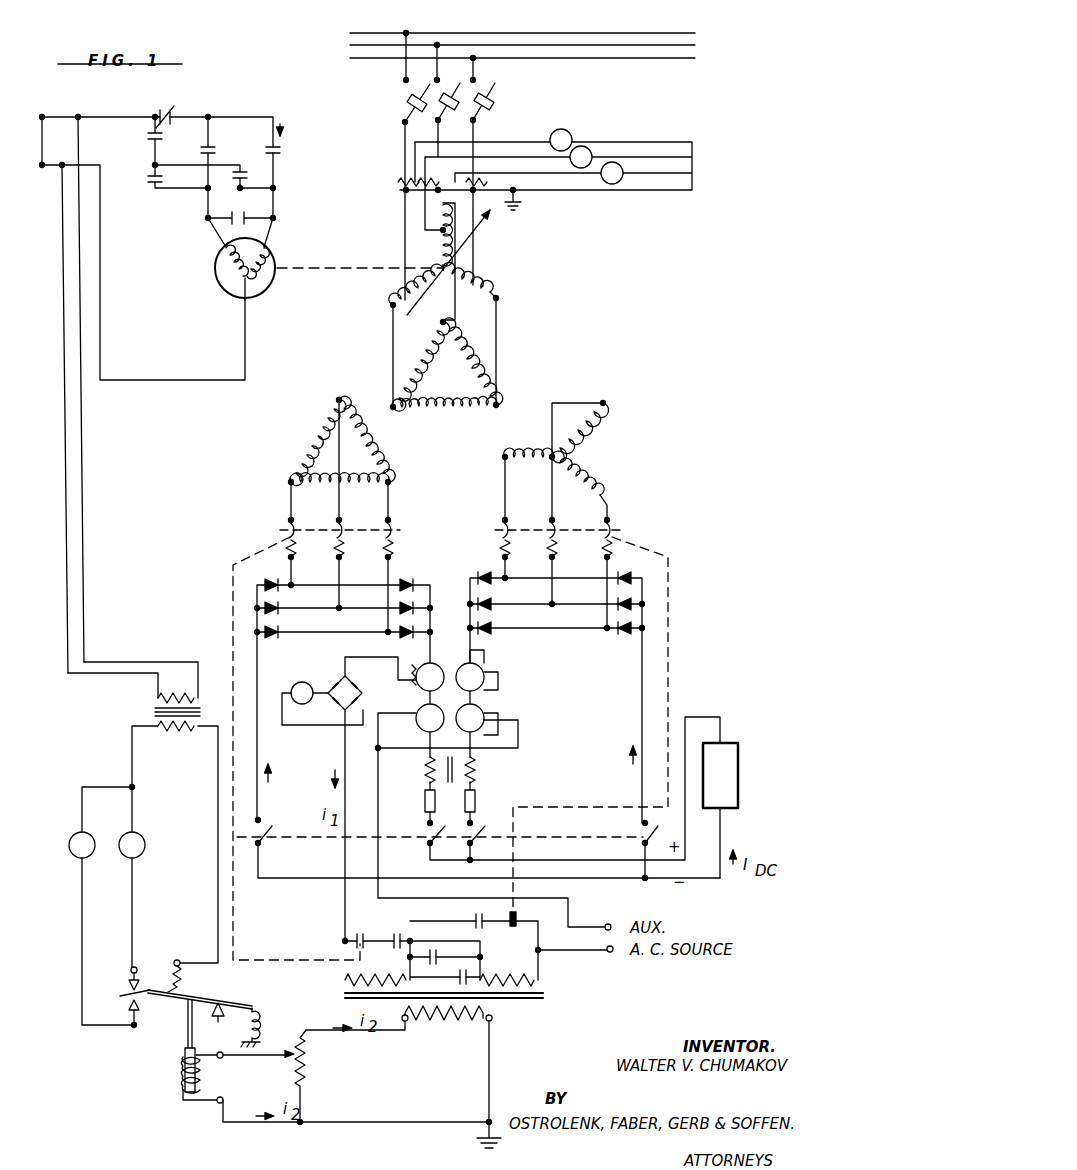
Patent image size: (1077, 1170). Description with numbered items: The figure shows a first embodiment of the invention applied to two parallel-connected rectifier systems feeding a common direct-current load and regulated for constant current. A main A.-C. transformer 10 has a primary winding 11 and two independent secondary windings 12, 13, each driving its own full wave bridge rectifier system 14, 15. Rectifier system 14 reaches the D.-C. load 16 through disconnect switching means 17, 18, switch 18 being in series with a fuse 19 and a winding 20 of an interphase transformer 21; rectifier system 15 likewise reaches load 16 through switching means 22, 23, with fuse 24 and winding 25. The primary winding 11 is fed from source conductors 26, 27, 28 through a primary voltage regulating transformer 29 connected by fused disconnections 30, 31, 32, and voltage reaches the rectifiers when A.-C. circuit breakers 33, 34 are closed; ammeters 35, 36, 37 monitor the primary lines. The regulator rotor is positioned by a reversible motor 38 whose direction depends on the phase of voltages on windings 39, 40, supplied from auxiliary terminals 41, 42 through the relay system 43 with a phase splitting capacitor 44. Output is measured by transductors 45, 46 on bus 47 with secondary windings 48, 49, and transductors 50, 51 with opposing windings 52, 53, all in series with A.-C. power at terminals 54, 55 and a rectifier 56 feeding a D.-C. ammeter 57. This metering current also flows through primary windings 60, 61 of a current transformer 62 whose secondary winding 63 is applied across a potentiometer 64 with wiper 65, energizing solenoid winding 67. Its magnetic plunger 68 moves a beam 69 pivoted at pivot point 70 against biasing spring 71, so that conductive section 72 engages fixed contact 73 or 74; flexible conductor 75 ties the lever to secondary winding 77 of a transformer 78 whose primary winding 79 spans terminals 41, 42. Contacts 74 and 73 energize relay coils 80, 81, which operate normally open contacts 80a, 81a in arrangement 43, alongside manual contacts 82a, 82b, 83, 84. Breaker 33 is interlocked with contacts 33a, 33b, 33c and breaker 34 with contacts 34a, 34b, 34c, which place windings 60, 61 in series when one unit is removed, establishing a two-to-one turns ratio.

The main A.-C. transformer 10 is at (531, 399).
The primary winding 11 is at (455, 391).
The secondary winding 12 is at (310, 434).
The secondary winding 13 is at (582, 441).
The rectifier system 14 is at (322, 639).
The rectifier system 15 is at (548, 634).
The D.-C. load 16 is at (740, 791).
The disconnect switching means 17 is at (266, 832).
The disconnect switching means 18 is at (427, 832).
The fuse 19 is at (423, 801).
The winding 20 is at (425, 771).
The interphase transformer 21 is at (475, 763).
The switching means 22 is at (482, 826).
The switching means 23 is at (640, 829).
The fuse 24 is at (478, 801).
The winding 25 is at (480, 772).
The conductor 26 is at (366, 23).
The conductor 27 is at (378, 41).
The conductor 28 is at (381, 59).
The primary voltage regulating transformer 29 is at (490, 290).
The fused disconnection 30 is at (400, 103).
The fused disconnection 31 is at (441, 109).
The fused disconnection 32 is at (495, 101).
The A.-C. circuit breaker 33 is at (282, 534).
The normally open contact 33a is at (365, 932).
The normally closed contact 33b is at (437, 952).
The normally open contact 33c is at (473, 919).
The A.-C. circuit breaker 34 is at (612, 520).
The normally open contact 34a is at (398, 932).
The normally closed contact 34b is at (458, 981).
The normally open contact 34c is at (513, 928).
The ammeter 35 is at (566, 129).
The ammeter 36 is at (592, 157).
The ammeter 37 is at (623, 174).
The reversible motor 38 is at (276, 264).
The winding 39 is at (230, 278).
The winding 40 is at (260, 278).
The terminal 41 is at (42, 164).
The terminal 42 is at (41, 119).
The relay system 43 is at (240, 138).
The phase splitting capacitor 44 is at (247, 212).
The transductor 45 is at (424, 664).
The transductor 46 is at (450, 710).
The bus 47 is at (461, 662).
The secondary winding 48 is at (412, 681).
The secondary winding 49 is at (416, 722).
The transductor 50 is at (484, 662).
The transductor 51 is at (484, 722).
The opposing polarity winding 52 is at (499, 681).
The opposing polarity winding 53 is at (499, 714).
The terminal 54 is at (612, 923).
The terminal 55 is at (614, 954).
The rectifier 56 is at (341, 672).
The D.-C. ammeter 57 is at (306, 682).
The primary winding 60 is at (363, 981).
The primary winding 61 is at (505, 976).
The current transformer 62 is at (503, 1013).
The secondary winding 63 is at (444, 1026).
The potentiometer 64 is at (306, 1068).
The potentiometer wiper 65 is at (282, 1056).
The solenoid winding 67 is at (182, 1072).
The magnetic plunger 68 is at (184, 1050).
The beam 69 is at (211, 1000).
The pivot point 70 is at (214, 1022).
The biasing spring 71 is at (258, 1027).
The conductive section 72 is at (128, 996).
The fixed contact 73 is at (142, 1011).
The fixed contact 74 is at (130, 989).
The flexible conductor 75 is at (177, 988).
The secondary winding 77 is at (181, 731).
The transformer 78 is at (146, 712).
The primary winding 79 is at (180, 695).
The relay coil 80 is at (143, 835).
The normally open contact 80a is at (281, 151).
The relay coil 81 is at (73, 839).
The normally open contact 81a is at (205, 146).
The manually operable normally open contact means 82a is at (149, 137).
The manually operable normally open contact means 82b is at (176, 100).
The manually operable normally open contact means 83 is at (147, 178).
The manually operable normally open contact means 84 is at (252, 163).